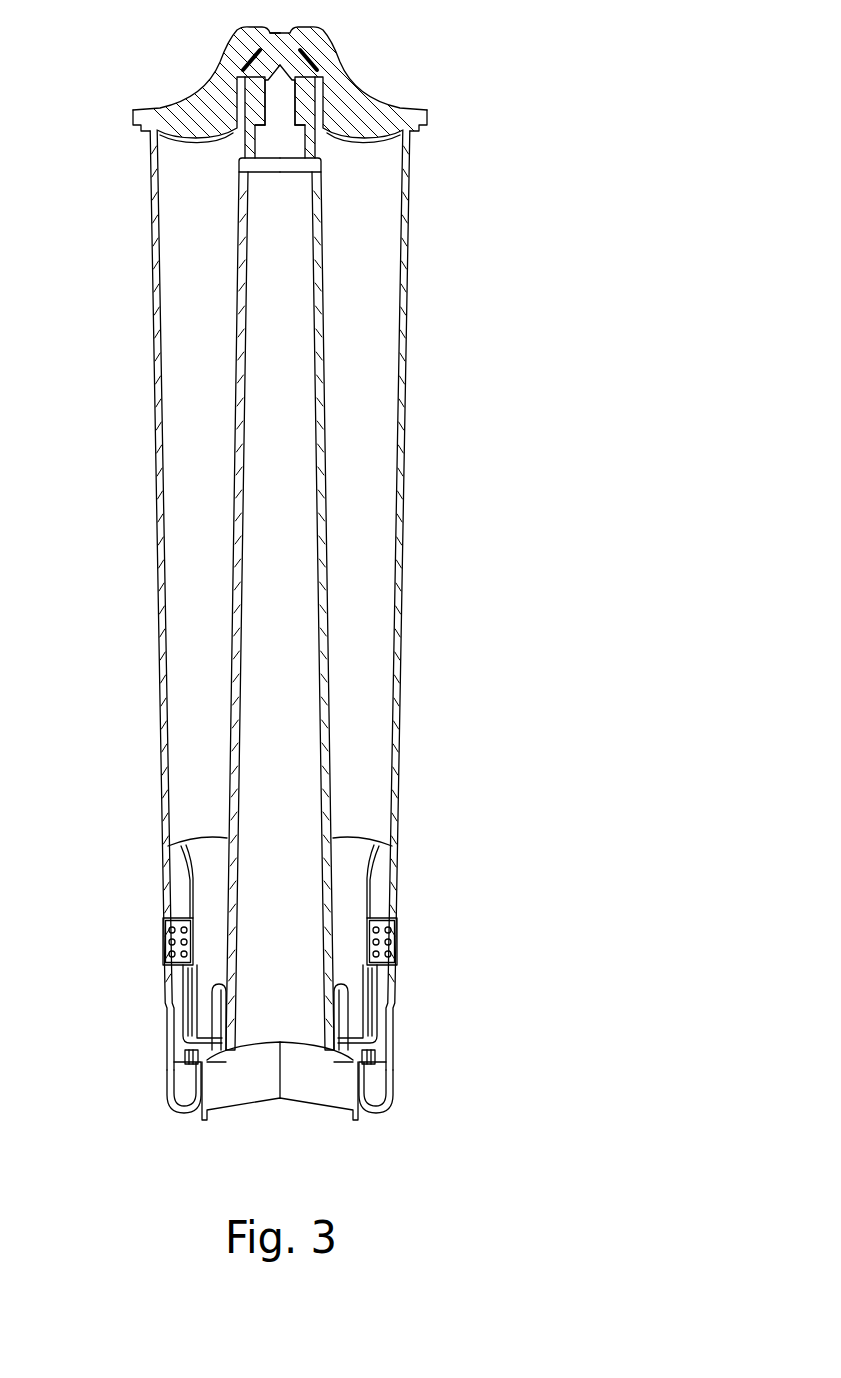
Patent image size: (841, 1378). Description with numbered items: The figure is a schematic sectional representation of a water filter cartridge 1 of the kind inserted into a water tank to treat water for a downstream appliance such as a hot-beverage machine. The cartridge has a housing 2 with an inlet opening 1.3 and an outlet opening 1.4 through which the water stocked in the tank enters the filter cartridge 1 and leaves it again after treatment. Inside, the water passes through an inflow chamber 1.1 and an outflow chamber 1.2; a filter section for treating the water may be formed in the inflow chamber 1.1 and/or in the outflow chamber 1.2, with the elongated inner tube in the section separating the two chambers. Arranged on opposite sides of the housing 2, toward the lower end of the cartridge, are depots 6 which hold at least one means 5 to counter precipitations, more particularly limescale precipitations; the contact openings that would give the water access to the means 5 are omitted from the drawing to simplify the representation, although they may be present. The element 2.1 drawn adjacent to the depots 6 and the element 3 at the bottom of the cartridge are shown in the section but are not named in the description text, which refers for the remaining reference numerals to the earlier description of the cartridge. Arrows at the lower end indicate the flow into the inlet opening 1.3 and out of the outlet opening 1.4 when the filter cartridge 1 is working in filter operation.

The water filter cartridge 1 is at (276, 606).
The inflow chamber 1.1 is at (178, 518).
The outflow chamber 1.2 is at (305, 632).
The inlet opening 1.3 is at (189, 1088).
The outlet opening 1.4 is at (259, 1118).
The housing 2 is at (279, 611).
The sleeve of inner tube 2.1 is at (162, 957).
The piston 3 is at (300, 1133).
The means to counter precipitations 5 is at (163, 932).
The depot 6 is at (139, 942).